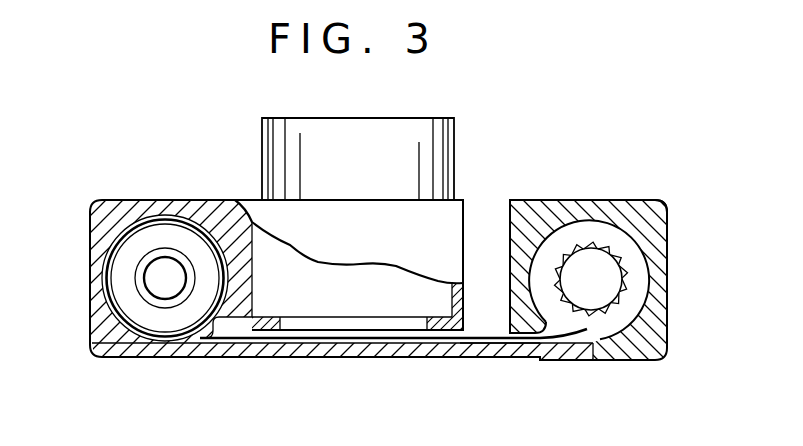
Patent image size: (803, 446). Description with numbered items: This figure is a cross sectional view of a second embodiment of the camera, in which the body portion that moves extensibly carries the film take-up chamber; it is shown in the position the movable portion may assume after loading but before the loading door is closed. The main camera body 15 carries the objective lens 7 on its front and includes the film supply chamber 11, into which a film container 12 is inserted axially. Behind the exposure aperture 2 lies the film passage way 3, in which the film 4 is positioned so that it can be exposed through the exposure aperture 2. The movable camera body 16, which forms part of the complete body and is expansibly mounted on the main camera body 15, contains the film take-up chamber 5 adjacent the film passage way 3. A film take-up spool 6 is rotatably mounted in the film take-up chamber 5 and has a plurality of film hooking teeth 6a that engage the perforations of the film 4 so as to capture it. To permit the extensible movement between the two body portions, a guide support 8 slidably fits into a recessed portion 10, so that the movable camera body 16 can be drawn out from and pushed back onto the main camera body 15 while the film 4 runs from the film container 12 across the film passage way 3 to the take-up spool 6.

The exposure aperture 2 is at (337, 324).
The film passage way 3 is at (293, 345).
The film 4 is at (412, 339).
The film take-up chamber 5 is at (631, 245).
The film take-up spool 6 is at (588, 258).
The film hooking teeth 6a is at (628, 286).
The objective lens 7 is at (282, 146).
The guide support 8 is at (499, 354).
The recessed portion 10 is at (566, 358).
The film supply chamber 11 is at (103, 296).
The film container 12 is at (150, 240).
The main camera body 15 is at (222, 357).
The movable camera body 16 is at (626, 199).